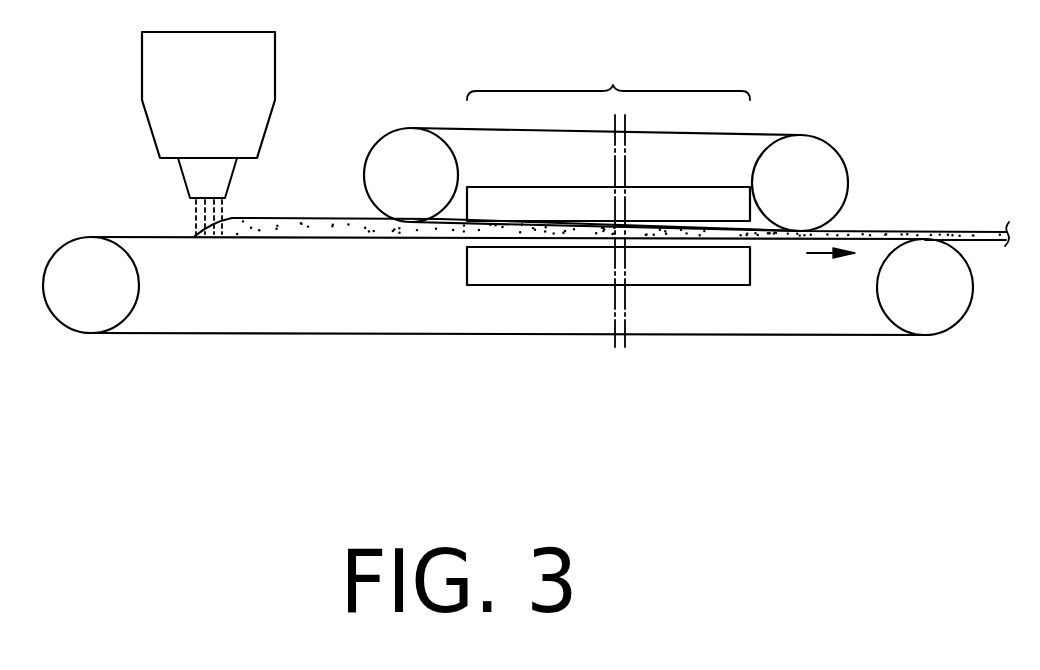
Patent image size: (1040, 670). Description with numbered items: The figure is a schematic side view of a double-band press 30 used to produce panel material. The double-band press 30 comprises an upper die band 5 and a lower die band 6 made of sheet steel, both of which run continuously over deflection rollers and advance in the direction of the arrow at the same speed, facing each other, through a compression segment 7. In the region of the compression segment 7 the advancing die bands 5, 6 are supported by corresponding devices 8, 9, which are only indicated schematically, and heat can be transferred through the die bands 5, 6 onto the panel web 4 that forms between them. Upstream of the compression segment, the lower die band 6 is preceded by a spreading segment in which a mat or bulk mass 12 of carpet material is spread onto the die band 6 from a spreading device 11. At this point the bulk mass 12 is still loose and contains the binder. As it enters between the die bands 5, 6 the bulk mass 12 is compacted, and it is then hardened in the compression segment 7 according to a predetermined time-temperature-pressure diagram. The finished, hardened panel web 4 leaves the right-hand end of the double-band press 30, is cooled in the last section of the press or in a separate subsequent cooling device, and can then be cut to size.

The panel web 4 is at (988, 235).
The upper die band 5 is at (729, 136).
The lower die band 6 is at (758, 335).
The compression segment 7 is at (606, 187).
The supporting device for the upper die band 8 is at (510, 200).
The supporting device for the lower die band 9 is at (522, 258).
The spreading device 11 is at (142, 75).
The bulk mass 12 is at (262, 220).
The double-band press 30 is at (334, 128).